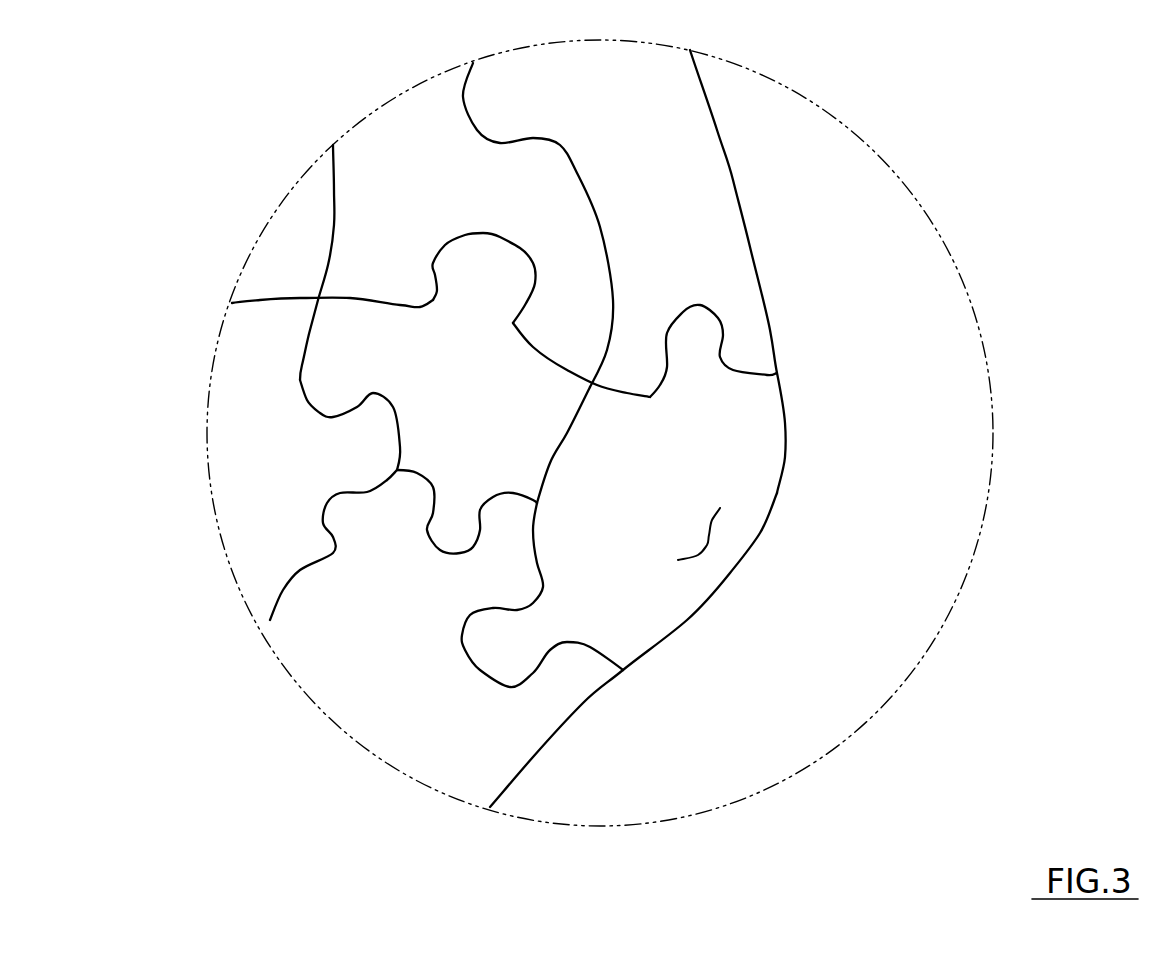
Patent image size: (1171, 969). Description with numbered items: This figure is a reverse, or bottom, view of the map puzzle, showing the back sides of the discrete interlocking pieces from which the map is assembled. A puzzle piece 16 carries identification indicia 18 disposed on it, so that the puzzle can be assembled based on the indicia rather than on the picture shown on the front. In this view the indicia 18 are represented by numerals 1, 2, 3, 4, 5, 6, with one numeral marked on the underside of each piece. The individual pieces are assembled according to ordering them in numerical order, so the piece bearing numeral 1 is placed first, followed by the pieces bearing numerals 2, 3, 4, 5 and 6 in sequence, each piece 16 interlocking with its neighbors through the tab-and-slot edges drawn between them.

The numeral 1 is at (422, 225).
The numeral 2 is at (649, 271).
The numeral 3 is at (493, 393).
The numeral 4 is at (335, 500).
The numeral 5 is at (496, 595).
The numeral 6 is at (633, 556).
The puzzle piece 16 is at (708, 535).
The identification indicia 18 is at (643, 503).